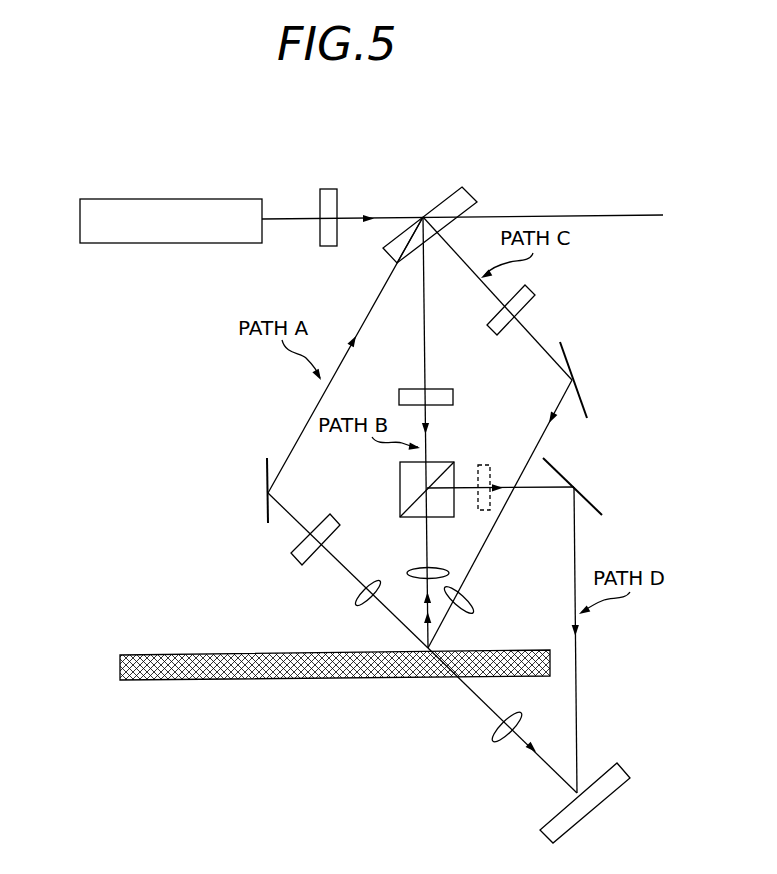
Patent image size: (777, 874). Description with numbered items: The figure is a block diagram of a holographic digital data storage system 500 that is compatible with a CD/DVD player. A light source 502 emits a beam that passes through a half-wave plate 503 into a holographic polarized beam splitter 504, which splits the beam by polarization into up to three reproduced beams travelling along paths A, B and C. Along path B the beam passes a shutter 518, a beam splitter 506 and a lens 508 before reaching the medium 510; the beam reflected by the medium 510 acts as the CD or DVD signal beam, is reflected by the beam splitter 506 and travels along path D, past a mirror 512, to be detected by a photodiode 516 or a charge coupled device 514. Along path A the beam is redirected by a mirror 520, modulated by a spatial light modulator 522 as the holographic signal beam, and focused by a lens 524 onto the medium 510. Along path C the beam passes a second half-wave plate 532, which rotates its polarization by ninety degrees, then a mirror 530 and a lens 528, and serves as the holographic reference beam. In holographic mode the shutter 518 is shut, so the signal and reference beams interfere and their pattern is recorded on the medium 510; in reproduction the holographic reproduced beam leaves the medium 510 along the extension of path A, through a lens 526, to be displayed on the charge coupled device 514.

The holographic digital data storage system 500 is at (543, 95).
The light source 502 is at (203, 199).
The λ/2 plate 503 is at (330, 189).
The holographic polarized beam splitter 504 is at (451, 193).
The beam splitter 506 is at (400, 479).
The lens 508 is at (422, 568).
The medium 510 is at (288, 680).
The mirror 512 is at (587, 500).
The charge coupled device (CCD) 514 is at (610, 799).
The photodiode (PD) 516 is at (487, 465).
The shutter 518 is at (438, 389).
The mirror 520 is at (263, 482).
The spatial light modulator (SLM) 522 is at (290, 555).
The lens 524 is at (357, 602).
The lens 526 is at (493, 730).
The lens 528 is at (472, 605).
The mirror 530 is at (582, 401).
The λ/2 plate 532 is at (533, 291).